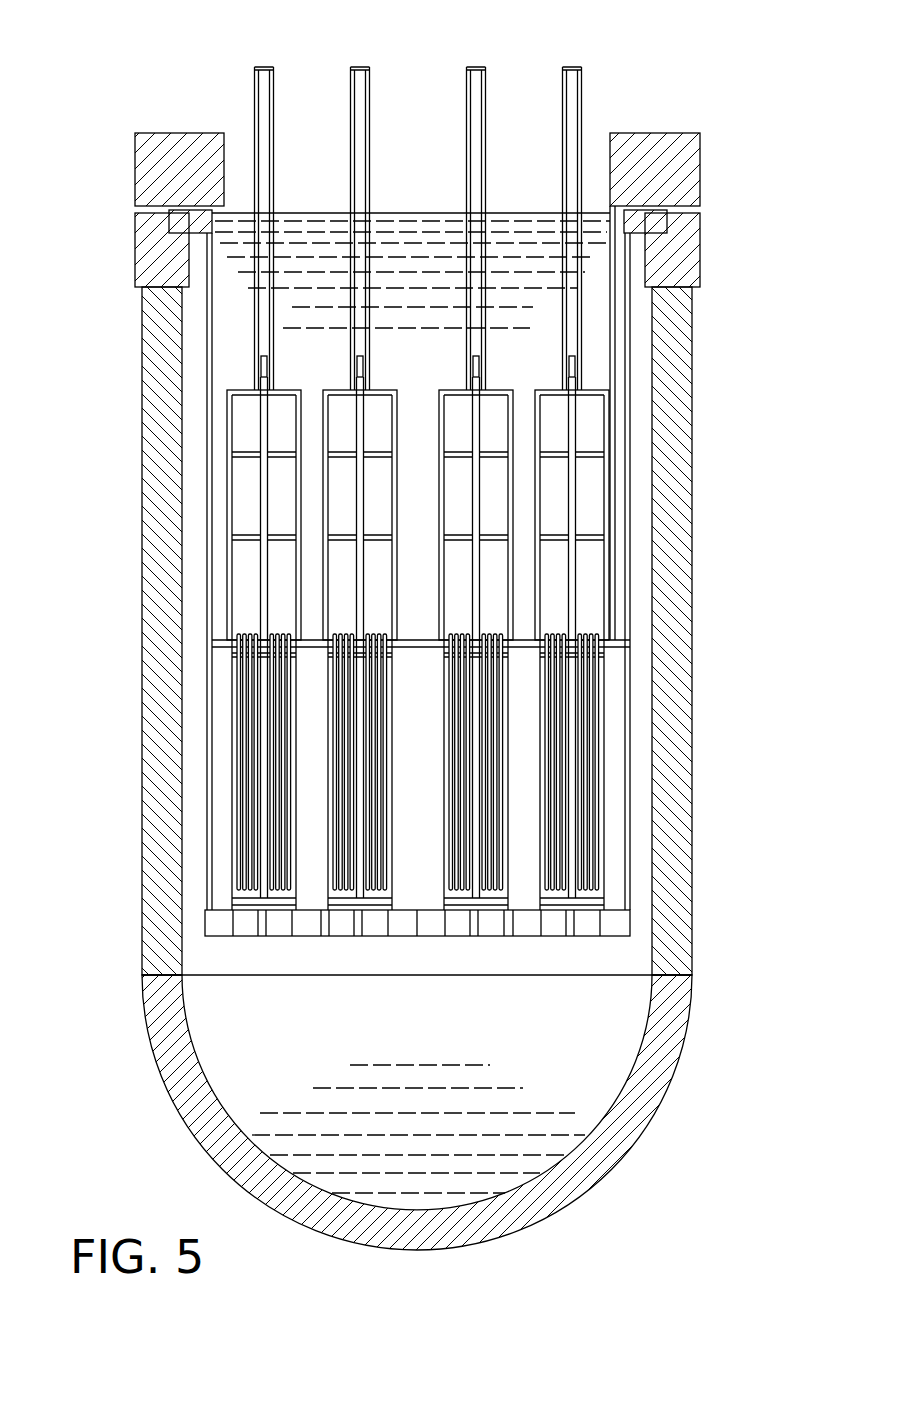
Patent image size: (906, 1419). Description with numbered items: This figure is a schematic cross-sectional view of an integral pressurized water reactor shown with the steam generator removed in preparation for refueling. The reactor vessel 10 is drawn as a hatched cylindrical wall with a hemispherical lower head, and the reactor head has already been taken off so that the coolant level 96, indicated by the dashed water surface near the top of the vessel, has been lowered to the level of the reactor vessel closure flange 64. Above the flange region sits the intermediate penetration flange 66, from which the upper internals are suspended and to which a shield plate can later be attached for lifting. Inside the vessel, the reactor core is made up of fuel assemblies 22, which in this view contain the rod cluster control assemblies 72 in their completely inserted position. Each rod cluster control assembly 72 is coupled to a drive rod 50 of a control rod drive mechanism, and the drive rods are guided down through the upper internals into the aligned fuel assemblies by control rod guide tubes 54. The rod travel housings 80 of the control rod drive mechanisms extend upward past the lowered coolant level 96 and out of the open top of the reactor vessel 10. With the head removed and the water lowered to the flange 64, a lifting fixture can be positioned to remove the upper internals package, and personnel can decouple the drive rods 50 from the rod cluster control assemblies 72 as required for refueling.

The reactor vessel 10 is at (688, 918).
The fuel assembly 22 is at (232, 780).
The drive rod 50 is at (573, 507).
The control rod guide tube 54 is at (603, 450).
The reactor flange 64 is at (700, 255).
The intermediate penetration flange 66 is at (700, 175).
The rod cluster control assembly 72 is at (588, 633).
The rod travel housing 80 is at (273, 115).
The coolant level 96 is at (243, 213).